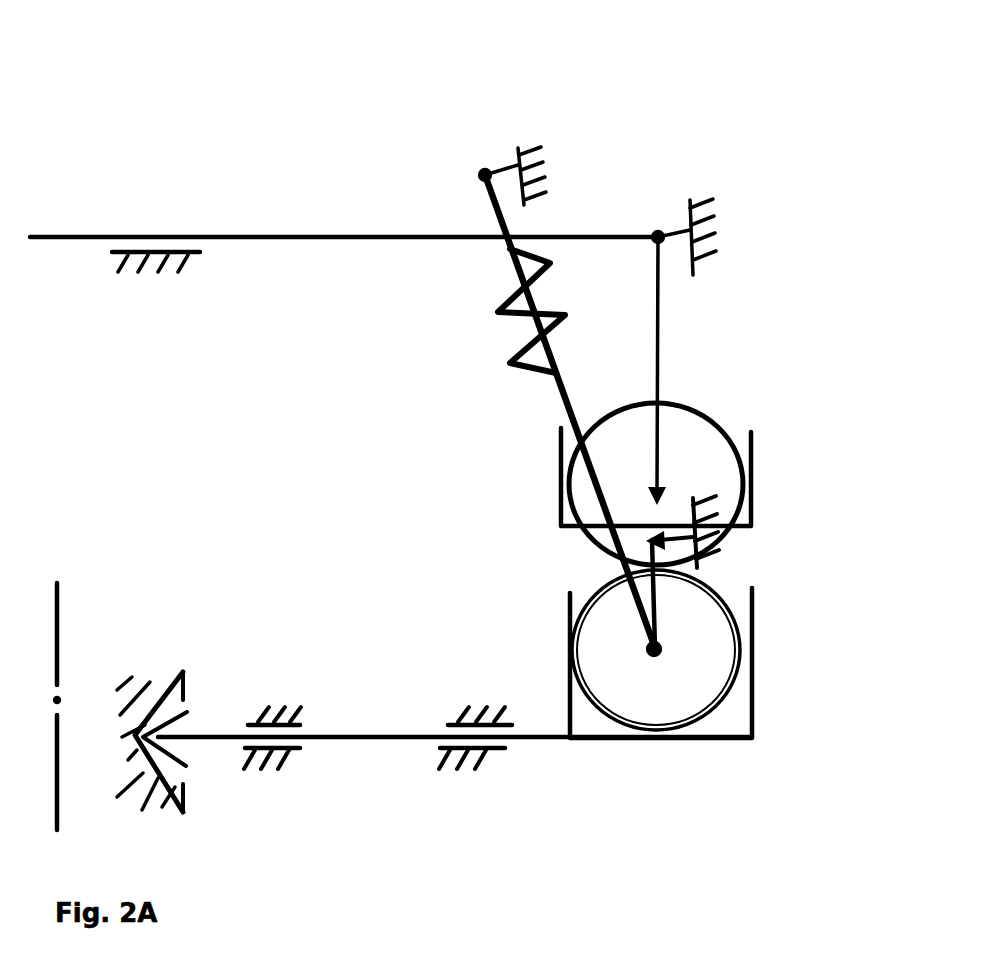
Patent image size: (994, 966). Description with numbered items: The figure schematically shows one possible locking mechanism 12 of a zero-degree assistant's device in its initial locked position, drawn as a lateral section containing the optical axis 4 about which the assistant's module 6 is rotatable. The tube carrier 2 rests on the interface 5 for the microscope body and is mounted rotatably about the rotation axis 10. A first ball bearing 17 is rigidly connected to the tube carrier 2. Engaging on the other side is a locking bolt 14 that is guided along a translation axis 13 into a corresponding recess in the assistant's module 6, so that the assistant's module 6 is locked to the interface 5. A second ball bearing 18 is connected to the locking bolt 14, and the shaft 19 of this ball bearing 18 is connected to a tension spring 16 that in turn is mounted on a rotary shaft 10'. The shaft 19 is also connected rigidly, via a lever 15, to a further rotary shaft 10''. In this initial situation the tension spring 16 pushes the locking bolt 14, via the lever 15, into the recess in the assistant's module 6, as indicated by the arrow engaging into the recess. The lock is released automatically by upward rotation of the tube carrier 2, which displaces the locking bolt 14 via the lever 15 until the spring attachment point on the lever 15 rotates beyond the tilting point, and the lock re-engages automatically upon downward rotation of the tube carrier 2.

The tube carrier 2 is at (344, 179).
The optical axis 4 is at (62, 610).
The interface 5 is at (160, 250).
The assistant's module 6 is at (185, 685).
The rotation axis 10 is at (720, 211).
The rotary shaft 10' is at (543, 153).
The further rotary shaft 10'' is at (765, 546).
The locking mechanism 12 is at (700, 76).
The translation axis 13 is at (371, 788).
The locking bolt 14 is at (455, 802).
The lever 15 is at (657, 602).
The tension spring 16 is at (553, 392).
The first ball bearing 17 is at (683, 458).
The second ball bearing 18 is at (733, 712).
The shaft 19 is at (749, 639).